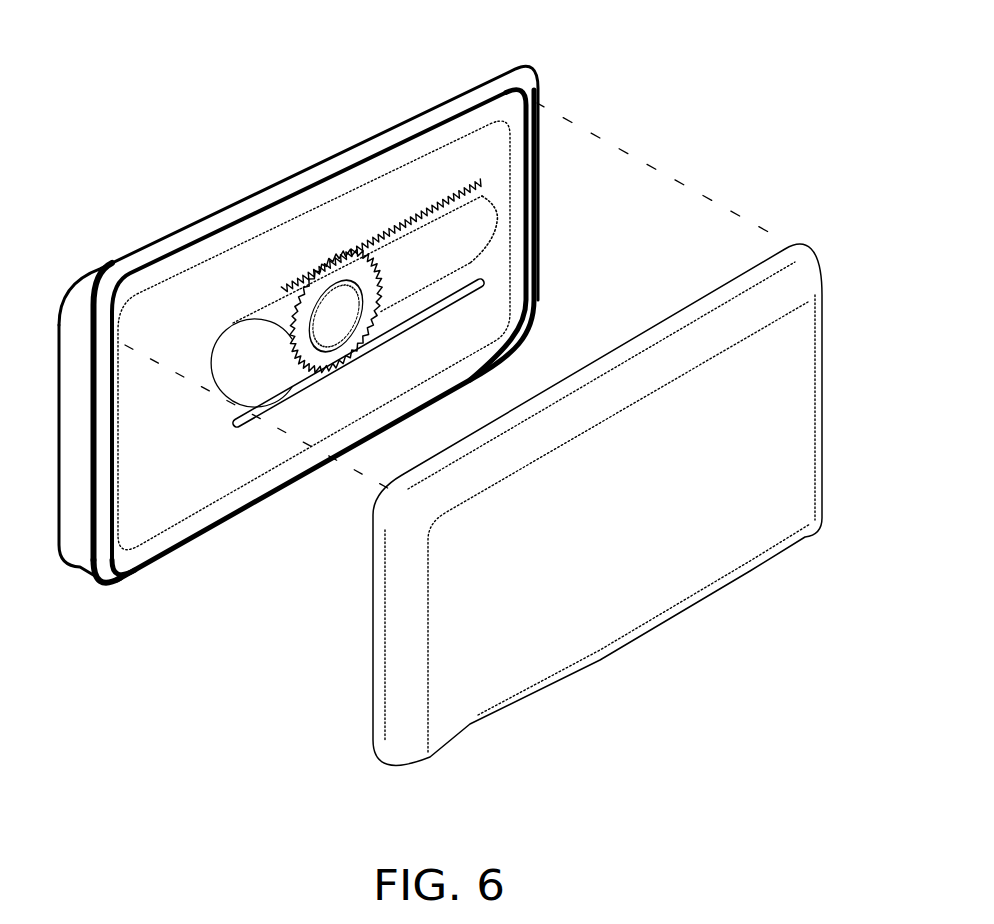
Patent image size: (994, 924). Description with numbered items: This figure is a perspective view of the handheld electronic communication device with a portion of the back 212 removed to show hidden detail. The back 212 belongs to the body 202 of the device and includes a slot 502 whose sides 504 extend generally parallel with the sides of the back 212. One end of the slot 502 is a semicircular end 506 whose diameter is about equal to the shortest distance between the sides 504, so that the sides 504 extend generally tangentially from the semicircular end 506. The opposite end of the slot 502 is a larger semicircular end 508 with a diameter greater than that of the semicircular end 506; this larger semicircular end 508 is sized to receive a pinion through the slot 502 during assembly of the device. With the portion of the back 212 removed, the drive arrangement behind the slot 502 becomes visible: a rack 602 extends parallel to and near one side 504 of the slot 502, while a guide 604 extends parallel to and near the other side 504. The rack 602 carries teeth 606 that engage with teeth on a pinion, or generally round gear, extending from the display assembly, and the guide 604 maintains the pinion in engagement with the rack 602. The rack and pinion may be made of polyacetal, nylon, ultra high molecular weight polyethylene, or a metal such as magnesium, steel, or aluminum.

The body 202 is at (82, 562).
The back 212 is at (653, 580).
The slot 502 is at (396, 213).
The sides 504 is at (433, 282).
The semicircular end 506 is at (494, 222).
The larger semicircular end 508 is at (227, 338).
The rack 602 is at (373, 234).
The guide 604 is at (453, 303).
The teeth 606 is at (445, 199).